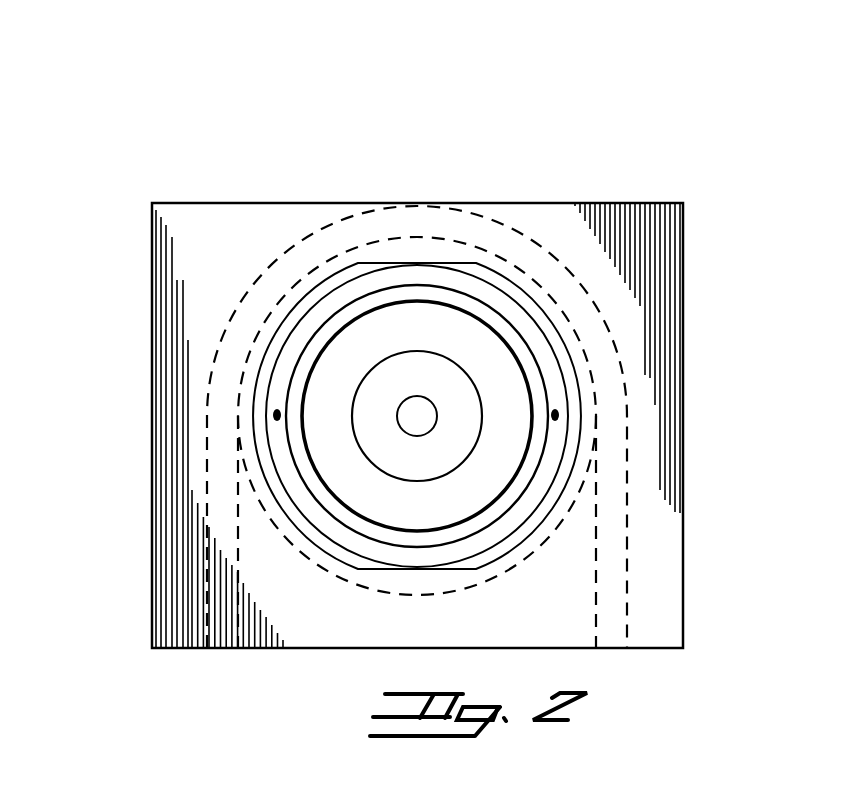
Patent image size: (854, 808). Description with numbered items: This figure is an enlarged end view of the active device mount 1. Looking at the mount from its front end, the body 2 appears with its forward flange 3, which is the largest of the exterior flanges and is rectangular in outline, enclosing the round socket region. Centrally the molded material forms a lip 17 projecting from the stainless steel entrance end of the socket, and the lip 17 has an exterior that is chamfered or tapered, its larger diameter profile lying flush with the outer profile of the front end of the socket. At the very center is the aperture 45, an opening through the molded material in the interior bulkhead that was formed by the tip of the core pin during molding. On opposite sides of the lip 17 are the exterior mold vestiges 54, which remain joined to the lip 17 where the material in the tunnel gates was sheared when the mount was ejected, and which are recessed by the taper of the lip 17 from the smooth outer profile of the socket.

The active device mount 1 is at (299, 178).
The body 2 is at (292, 307).
The forward flange 3 is at (540, 212).
The lip 17 is at (320, 522).
The aperture 45 is at (426, 428).
The mold vestiges 54 is at (275, 415).